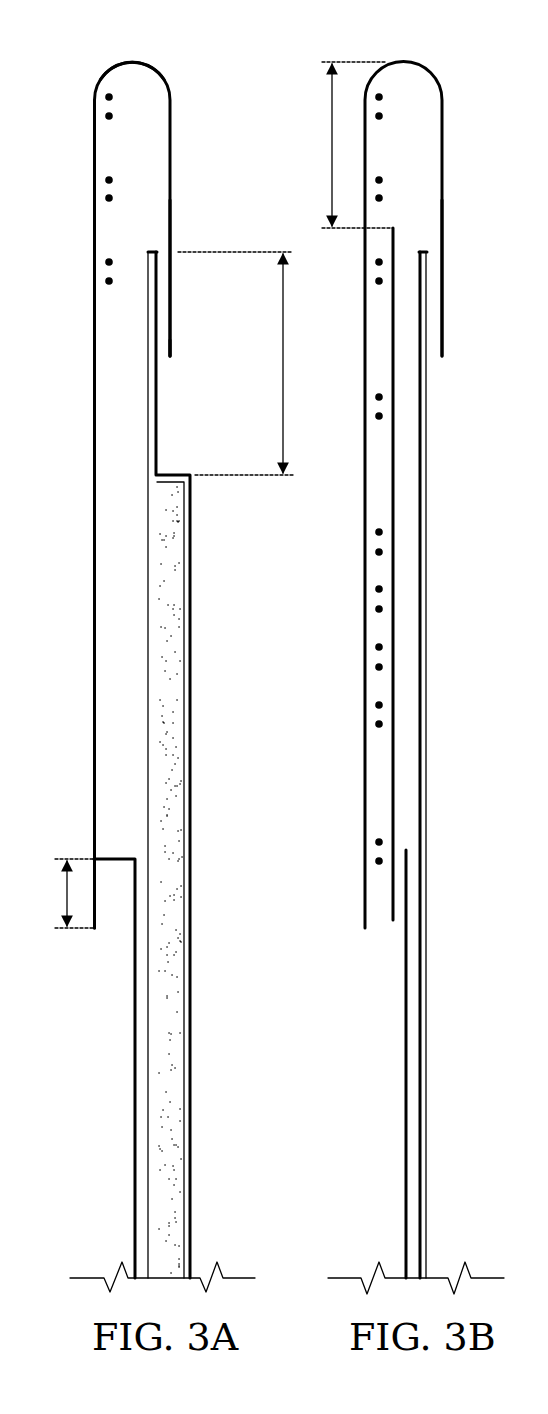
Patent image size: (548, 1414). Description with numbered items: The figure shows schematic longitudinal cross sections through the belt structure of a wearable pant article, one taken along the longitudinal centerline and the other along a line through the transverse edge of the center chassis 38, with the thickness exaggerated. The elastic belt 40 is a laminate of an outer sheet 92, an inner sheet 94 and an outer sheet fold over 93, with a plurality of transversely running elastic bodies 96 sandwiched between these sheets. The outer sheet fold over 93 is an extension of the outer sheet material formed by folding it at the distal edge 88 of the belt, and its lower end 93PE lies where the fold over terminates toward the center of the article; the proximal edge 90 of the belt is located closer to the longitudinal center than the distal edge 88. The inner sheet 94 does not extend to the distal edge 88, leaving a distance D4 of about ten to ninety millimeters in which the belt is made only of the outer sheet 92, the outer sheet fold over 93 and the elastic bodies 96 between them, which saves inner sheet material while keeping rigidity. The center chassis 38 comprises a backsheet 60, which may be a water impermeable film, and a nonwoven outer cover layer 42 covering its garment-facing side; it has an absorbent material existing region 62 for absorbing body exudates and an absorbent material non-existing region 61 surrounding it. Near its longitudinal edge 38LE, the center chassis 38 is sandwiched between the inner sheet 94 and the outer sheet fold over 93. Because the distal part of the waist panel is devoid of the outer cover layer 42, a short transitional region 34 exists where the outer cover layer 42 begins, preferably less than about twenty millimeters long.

In FIG. 3A, the transitional region 34 is at (67, 890).
In FIG. 3A, the center chassis 38 is at (216, 1058).
In FIG. 3B, the center chassis 38 is at (465, 1058).
In FIG. 3A, the longitudinal edge of the center chassis 38LE is at (153, 250).
In FIG. 3B, the longitudinal edge of the center chassis 38LE is at (421, 250).
In FIG. 3A, the elastic belt 40 is at (65, 650).
In FIG. 3B, the elastic belt 40 is at (335, 592).
In FIG. 3A, the outer cover layer 42 is at (135, 1170).
In FIG. 3A, the backsheet 60 is at (148, 1072).
In FIG. 3A, the absorbent material non-existing region 61 is at (283, 403).
In FIG. 3A, the absorbent material existing region 62 is at (175, 603).
In FIG. 3A, the distal edge 88 is at (130, 62).
In FIG. 3A, the proximal edge 90 is at (94, 930).
In FIG. 3A, the outer sheet 92 is at (94, 470).
In FIG. 3B, the outer sheet 92 is at (365, 343).
In FIG. 3A, the outer sheet fold over 93 is at (172, 313).
In FIG. 3B, the outer sheet fold over 93 is at (442, 327).
In FIG. 3A, the proximal end of side wall 93PE is at (172, 356).
In FIG. 3B, the inner sheet 94 is at (396, 472).
In FIG. 3A, the elastic bodies 96 is at (100, 97).
In FIG. 3B, the elastic bodies 96 is at (379, 479).
In FIG. 3B, the distance from the inner belt distal edge to the belt distal edge D4 is at (346, 145).